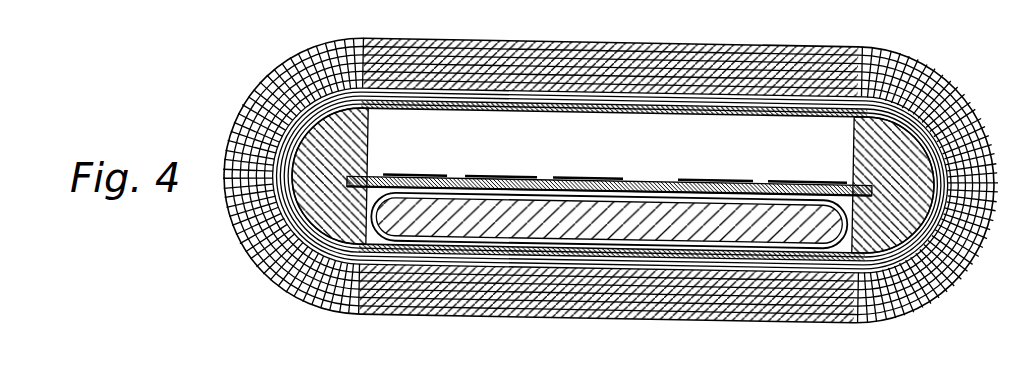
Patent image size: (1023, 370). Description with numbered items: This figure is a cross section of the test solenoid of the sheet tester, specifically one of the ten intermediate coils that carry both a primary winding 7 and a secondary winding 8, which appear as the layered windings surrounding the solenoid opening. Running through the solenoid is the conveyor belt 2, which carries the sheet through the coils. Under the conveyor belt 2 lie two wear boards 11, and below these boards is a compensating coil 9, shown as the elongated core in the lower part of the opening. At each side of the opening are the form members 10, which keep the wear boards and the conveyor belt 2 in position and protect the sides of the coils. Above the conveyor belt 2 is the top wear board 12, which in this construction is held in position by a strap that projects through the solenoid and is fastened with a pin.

The conveyor belt 2 is at (572, 177).
The primary winding 7 is at (781, 60).
The secondary winding 8 is at (910, 66).
The compensating coil 9 is at (768, 229).
The form members 10 is at (320, 212).
The wear boards 11 is at (375, 179).
The top wear board 12 is at (764, 107).